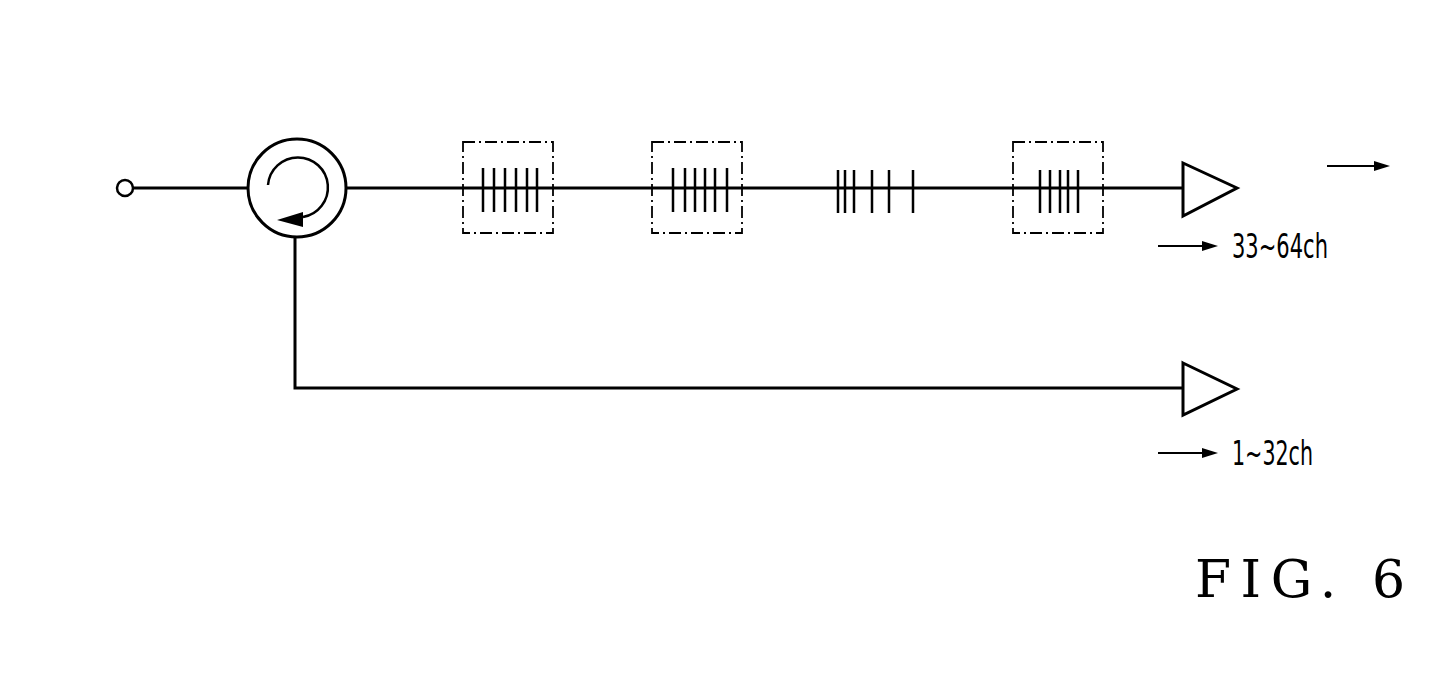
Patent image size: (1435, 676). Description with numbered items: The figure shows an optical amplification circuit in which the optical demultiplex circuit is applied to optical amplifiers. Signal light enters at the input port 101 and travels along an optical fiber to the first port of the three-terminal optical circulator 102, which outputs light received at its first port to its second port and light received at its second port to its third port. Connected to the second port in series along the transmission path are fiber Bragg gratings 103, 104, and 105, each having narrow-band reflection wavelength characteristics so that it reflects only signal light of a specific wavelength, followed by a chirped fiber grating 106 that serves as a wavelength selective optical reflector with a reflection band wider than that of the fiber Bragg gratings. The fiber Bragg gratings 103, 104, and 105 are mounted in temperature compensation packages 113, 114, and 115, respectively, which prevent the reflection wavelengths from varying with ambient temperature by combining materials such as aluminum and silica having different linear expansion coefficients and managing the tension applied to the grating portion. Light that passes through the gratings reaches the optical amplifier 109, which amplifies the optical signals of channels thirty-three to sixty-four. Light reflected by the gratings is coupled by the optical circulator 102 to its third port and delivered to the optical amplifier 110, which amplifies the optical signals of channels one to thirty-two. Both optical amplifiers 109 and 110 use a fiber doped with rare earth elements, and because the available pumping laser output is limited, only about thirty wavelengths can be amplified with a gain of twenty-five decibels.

The input port 101 is at (124, 180).
The optical circulator 102 is at (303, 141).
The fiber Bragg grating 103 is at (507, 162).
The fiber Bragg grating 104 is at (700, 163).
The fiber Bragg grating 105 is at (1062, 160).
The chirped fiber grating 106 is at (875, 160).
The optical amplifier 109 is at (1215, 178).
The optical amplifier 110 is at (1215, 377).
The temperature compensation package 113 is at (530, 235).
The temperature compensation package 114 is at (717, 235).
The temperature compensation package 115 is at (1050, 237).